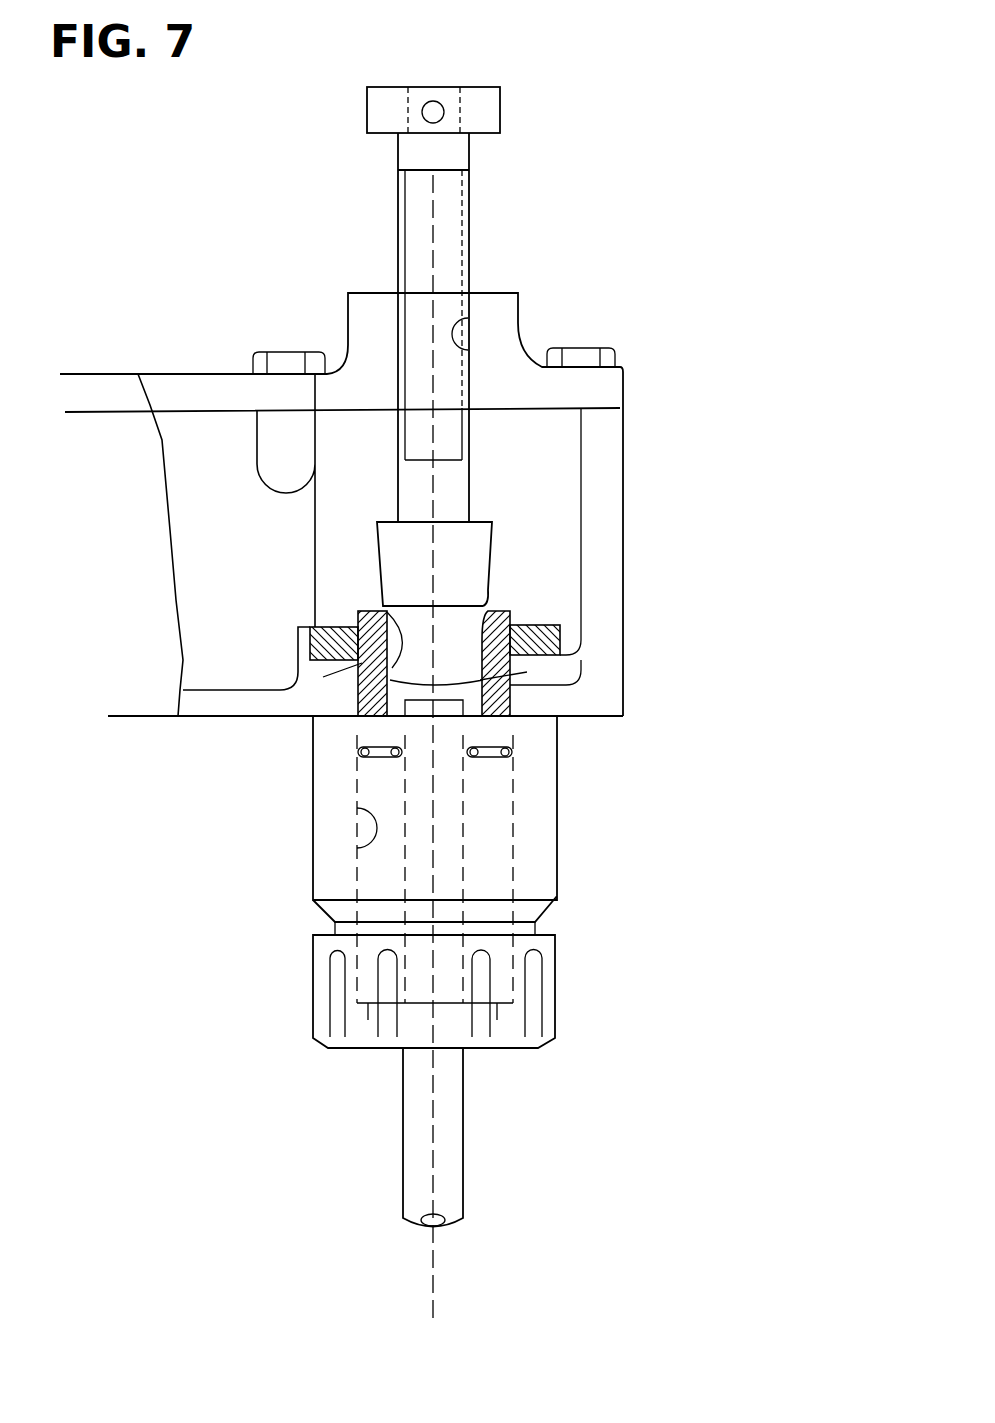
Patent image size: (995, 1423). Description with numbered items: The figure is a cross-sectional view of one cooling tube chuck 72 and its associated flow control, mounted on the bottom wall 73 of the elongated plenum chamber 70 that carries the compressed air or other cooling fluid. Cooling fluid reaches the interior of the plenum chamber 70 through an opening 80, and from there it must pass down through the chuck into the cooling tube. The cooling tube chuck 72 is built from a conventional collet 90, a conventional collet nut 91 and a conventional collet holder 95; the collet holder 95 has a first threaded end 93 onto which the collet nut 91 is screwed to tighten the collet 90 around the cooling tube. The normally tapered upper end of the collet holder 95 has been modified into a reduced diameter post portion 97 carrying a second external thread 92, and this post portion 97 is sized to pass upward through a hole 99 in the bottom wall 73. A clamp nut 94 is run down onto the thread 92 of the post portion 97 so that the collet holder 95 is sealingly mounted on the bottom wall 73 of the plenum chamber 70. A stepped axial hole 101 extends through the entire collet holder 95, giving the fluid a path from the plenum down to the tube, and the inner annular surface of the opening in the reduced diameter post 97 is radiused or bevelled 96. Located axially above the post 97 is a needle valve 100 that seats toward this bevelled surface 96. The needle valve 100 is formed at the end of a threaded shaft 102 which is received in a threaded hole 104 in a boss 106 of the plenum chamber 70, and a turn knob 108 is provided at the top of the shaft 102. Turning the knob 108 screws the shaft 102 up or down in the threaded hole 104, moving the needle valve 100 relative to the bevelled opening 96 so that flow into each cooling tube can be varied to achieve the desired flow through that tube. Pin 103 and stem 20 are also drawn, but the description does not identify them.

The turn knob 108 is at (487, 113).
The threaded shaft 102 is at (491, 214).
The boss 106 is at (478, 298).
The threaded hole 104 is at (468, 348).
The plenum chamber 70 is at (100, 374).
The opening 80 is at (125, 578).
The bottom wall 73 is at (205, 710).
The clamp nut 94 is at (544, 636).
The reduced diameter post portion 97 is at (372, 648).
The second external thread 92 is at (560, 662).
The hole 99 is at (473, 703).
The needle valve 100 is at (468, 542).
The radiused/bevelled surface 96 is at (487, 584).
The stepped axial hole 101 is at (395, 610).
The cross pin 103 is at (490, 750).
The cooling tube chuck 72 is at (623, 815).
The collet holder 95 is at (373, 887).
The first threaded end 93 is at (343, 931).
The collet 90 is at (368, 1020).
The collet nut 91 is at (510, 1003).
The valve stem 20 is at (452, 1160).